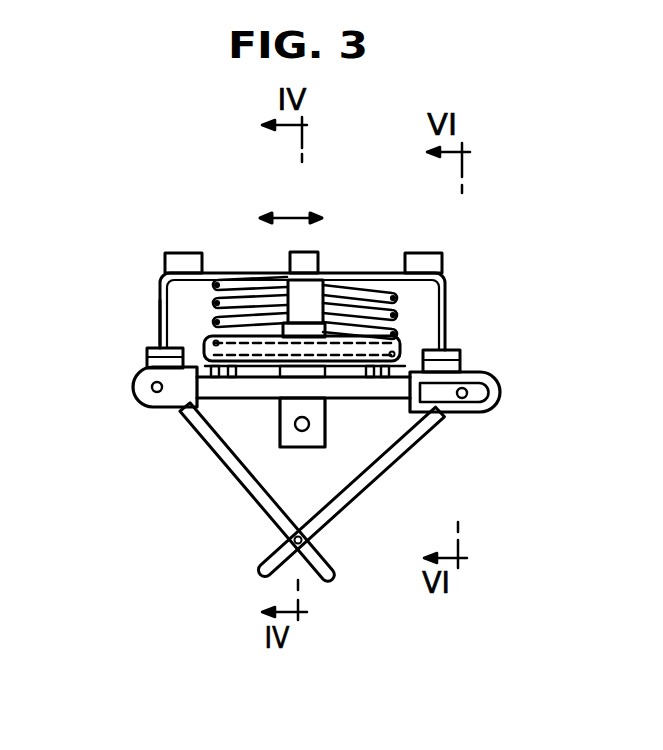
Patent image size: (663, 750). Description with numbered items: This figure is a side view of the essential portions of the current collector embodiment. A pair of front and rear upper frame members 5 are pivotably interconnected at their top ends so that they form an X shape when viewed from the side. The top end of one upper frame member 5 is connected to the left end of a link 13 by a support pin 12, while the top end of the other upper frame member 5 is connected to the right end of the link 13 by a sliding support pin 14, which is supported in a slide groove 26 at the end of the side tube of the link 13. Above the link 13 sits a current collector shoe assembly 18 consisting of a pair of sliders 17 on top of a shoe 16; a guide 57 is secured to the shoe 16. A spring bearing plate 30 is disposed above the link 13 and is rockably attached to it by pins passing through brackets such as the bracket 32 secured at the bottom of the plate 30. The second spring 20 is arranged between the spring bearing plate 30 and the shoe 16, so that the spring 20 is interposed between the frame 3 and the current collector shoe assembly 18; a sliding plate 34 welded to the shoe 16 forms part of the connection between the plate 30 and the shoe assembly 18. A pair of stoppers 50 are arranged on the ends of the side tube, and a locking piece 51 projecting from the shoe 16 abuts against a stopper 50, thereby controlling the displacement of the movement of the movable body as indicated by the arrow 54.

The frame 3 is at (363, 373).
The upper frame member 5 is at (225, 458).
The support pin 12 is at (148, 403).
The link 13 is at (486, 424).
The sliding support pin 14 is at (463, 401).
The shoe 16 is at (443, 278).
The slider 17 is at (180, 253).
The current collector shoe assembly 18 is at (150, 282).
The second spring 20 is at (393, 332).
The slide groove 26 is at (488, 413).
The spring bearing plate 30 is at (405, 341).
The bracket 32 is at (220, 373).
The sliding plate 34 is at (312, 303).
The stopper 50 is at (148, 362).
The locking piece 51 is at (158, 318).
The arrow 54 is at (291, 202).
The guide 57 is at (290, 256).